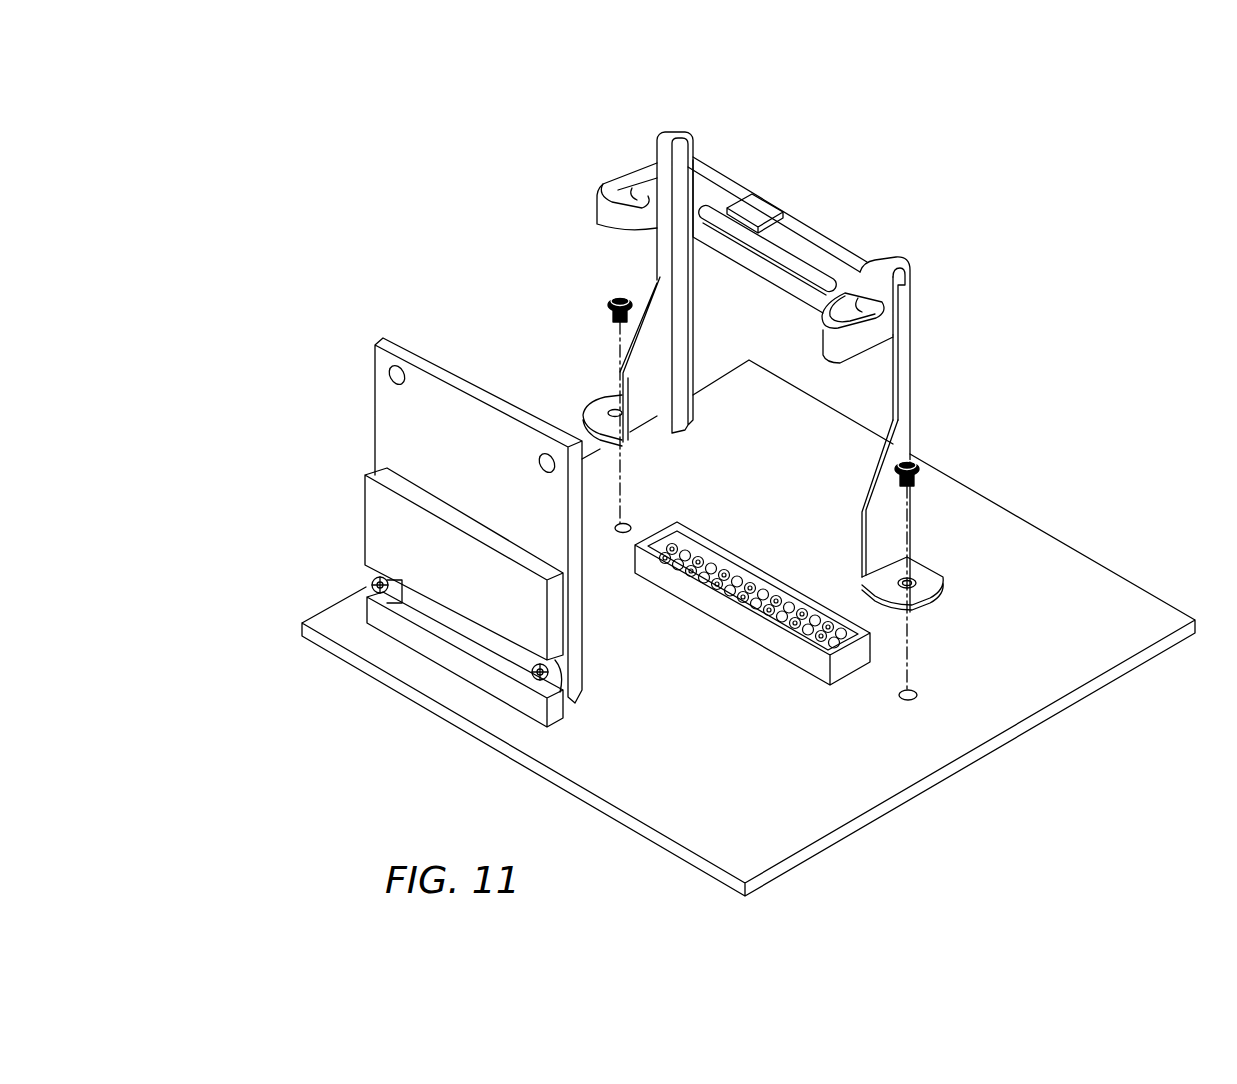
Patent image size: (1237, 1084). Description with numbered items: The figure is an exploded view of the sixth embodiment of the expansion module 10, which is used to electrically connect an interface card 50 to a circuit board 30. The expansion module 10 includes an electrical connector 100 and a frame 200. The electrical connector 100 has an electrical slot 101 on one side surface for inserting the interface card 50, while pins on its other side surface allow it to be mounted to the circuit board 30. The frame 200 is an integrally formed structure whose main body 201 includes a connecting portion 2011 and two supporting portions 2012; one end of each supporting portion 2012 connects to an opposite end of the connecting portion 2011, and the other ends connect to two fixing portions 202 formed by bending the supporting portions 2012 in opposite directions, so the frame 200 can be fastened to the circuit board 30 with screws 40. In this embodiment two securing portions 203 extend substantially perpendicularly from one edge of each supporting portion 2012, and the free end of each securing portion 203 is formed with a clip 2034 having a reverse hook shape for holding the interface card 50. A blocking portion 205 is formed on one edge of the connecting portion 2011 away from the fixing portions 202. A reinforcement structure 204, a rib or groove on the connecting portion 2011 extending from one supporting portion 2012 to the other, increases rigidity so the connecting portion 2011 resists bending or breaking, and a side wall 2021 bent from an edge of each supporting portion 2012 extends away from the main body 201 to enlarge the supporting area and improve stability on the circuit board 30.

The expansion module 10 is at (285, 133).
The circuit board 30 is at (1133, 606).
The screw 40 is at (607, 301).
The interface card 50 is at (395, 417).
The electrical connector 100 is at (822, 693).
The electrical slot 101 is at (818, 652).
The frame 200 is at (767, 362).
The main body 201 is at (796, 227).
The connecting portion 2011 is at (722, 193).
The supporting portion 2012 is at (672, 246).
The fixing portion 202 is at (603, 410).
The side wall 2021 is at (652, 358).
The securing portion 203 is at (753, 253).
The clip 2034 is at (648, 208).
The reinforcement structure 204 is at (797, 260).
The blocking portion 205 is at (757, 207).